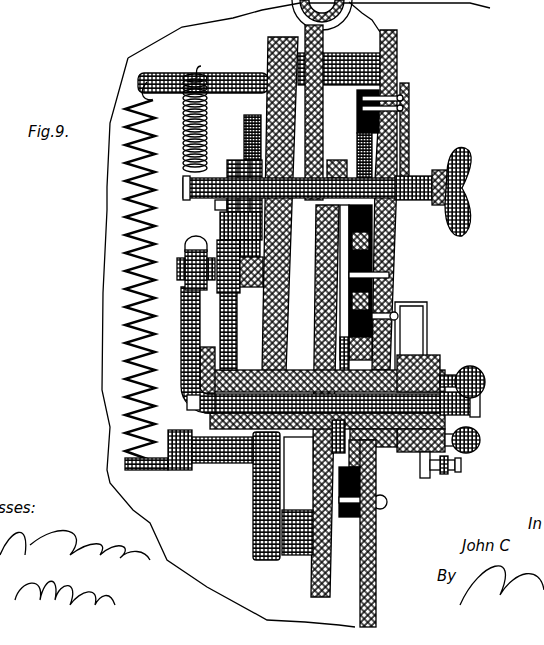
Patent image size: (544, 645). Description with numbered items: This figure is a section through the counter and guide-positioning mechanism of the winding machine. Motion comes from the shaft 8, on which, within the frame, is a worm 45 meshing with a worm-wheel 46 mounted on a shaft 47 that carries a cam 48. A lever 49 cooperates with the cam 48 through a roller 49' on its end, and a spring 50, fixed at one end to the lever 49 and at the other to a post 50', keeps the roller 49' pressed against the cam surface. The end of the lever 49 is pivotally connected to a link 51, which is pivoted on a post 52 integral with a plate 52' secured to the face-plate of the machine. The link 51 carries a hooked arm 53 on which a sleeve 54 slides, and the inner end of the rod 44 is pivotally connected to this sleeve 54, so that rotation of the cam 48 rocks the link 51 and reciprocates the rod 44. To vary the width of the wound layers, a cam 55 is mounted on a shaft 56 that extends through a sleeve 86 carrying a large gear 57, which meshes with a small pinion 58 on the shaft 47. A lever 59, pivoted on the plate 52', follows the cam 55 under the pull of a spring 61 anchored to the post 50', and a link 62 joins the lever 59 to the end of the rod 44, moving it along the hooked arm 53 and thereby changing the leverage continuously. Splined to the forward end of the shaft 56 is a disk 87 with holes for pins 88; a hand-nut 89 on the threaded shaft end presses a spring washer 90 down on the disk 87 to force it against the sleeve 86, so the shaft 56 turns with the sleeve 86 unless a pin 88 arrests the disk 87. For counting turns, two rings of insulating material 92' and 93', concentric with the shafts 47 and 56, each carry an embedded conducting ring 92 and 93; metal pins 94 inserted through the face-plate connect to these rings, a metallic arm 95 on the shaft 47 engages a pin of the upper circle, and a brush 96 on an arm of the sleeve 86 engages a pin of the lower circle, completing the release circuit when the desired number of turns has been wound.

The shaft 8 is at (295, 13).
The rod 44 is at (176, 259).
The worm 45 is at (338, 18).
The worm-wheel 46 is at (272, 52).
The shaft 47 is at (327, 197).
The cam 48 is at (248, 123).
The lever 49 is at (240, 172).
The roller 49' is at (207, 208).
The spring 50 is at (182, 119).
The post 50' is at (203, 74).
The link 51 is at (222, 232).
The post 52 is at (239, 305).
The plate 52' is at (252, 302).
The hooked arm 53 is at (190, 318).
The sleeve 54 is at (188, 290).
The cam 55 is at (208, 347).
The shaft 56 is at (192, 400).
The large gear 57 is at (310, 480).
The small pinion 58 is at (336, 162).
The lever 59 is at (188, 460).
The spring 61 is at (125, 305).
The link 62 is at (188, 417).
The sleeve 86 is at (258, 432).
The disk 87 is at (440, 454).
The pins 88 is at (436, 480).
The hand-nut 89 is at (480, 444).
The spring washer 90 is at (445, 380).
The ring of conducting material 92 is at (380, 294).
The ring of insulating material 92' is at (397, 135).
The ring of conducting material 93 is at (375, 478).
The ring of insulating material 93' is at (351, 532).
The metal pins 94 is at (404, 103).
The metallic arm 95 is at (410, 134).
The brush 96 is at (398, 316).